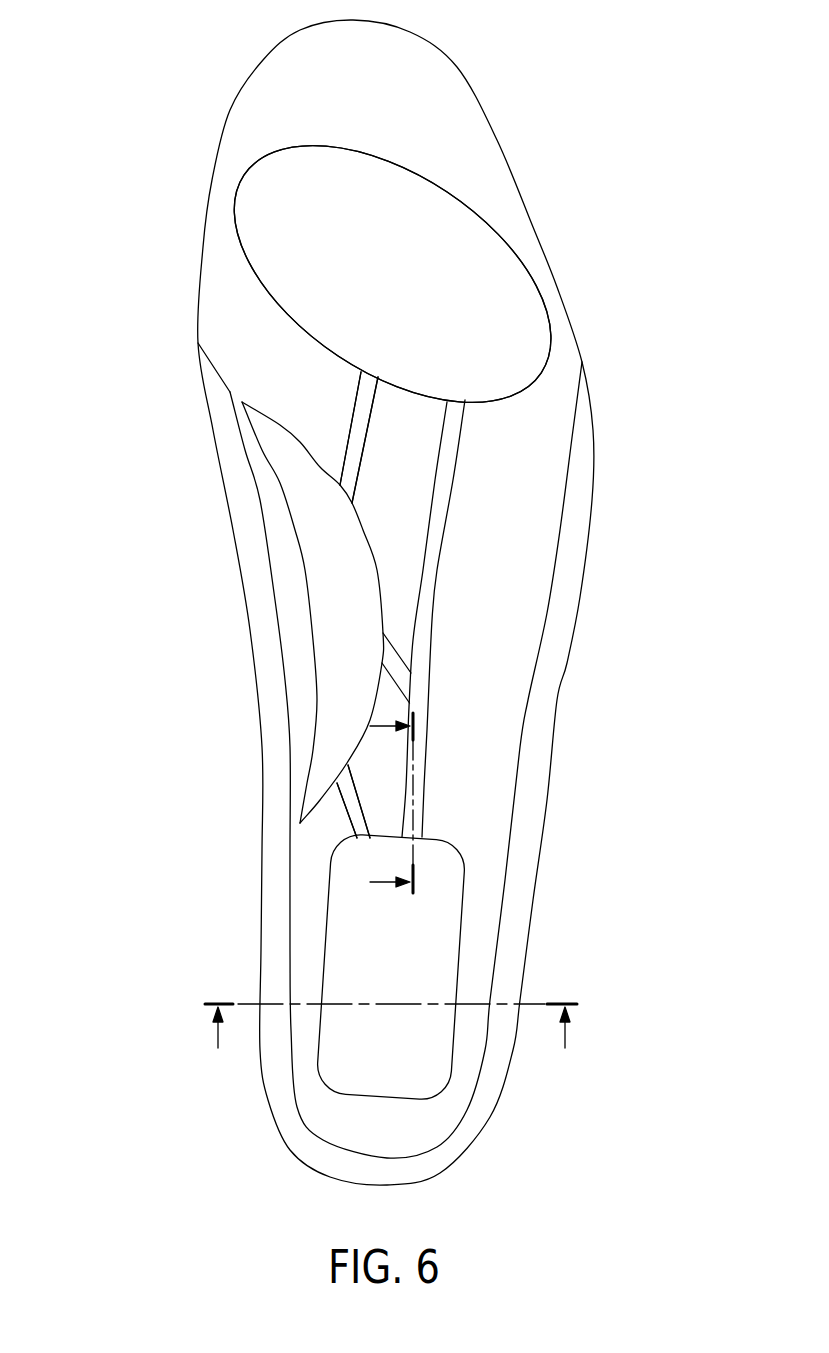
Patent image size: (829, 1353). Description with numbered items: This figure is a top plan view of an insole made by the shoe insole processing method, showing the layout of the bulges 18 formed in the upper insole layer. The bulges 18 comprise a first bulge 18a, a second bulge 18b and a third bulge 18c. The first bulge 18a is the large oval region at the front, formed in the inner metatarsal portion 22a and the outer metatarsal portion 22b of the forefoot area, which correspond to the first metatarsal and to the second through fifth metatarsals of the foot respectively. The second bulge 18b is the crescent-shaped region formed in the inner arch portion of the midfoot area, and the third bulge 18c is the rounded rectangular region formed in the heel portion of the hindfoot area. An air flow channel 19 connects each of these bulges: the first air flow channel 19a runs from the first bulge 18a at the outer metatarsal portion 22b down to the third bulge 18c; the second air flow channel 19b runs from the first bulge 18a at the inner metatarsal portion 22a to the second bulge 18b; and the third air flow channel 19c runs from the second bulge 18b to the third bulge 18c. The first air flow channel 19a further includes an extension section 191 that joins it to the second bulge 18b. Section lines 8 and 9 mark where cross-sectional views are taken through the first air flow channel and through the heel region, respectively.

The bulges 18 is at (90, 226).
The first bulge 18a is at (317, 257).
The second bulge 18b is at (352, 593).
The third bulge 18c is at (365, 923).
The air flow channel 19 is at (708, 400).
The first air flow channel 19a is at (443, 487).
The second air flow channel 19b is at (358, 432).
The third air flow channel 19c is at (355, 810).
The extension section 191 is at (392, 662).
The inner metatarsal portion 22a is at (380, 200).
The outer metatarsal portion 22b is at (480, 297).
The section line 8- 8 is at (409, 803).
The section line 9- 9 is at (389, 1024).